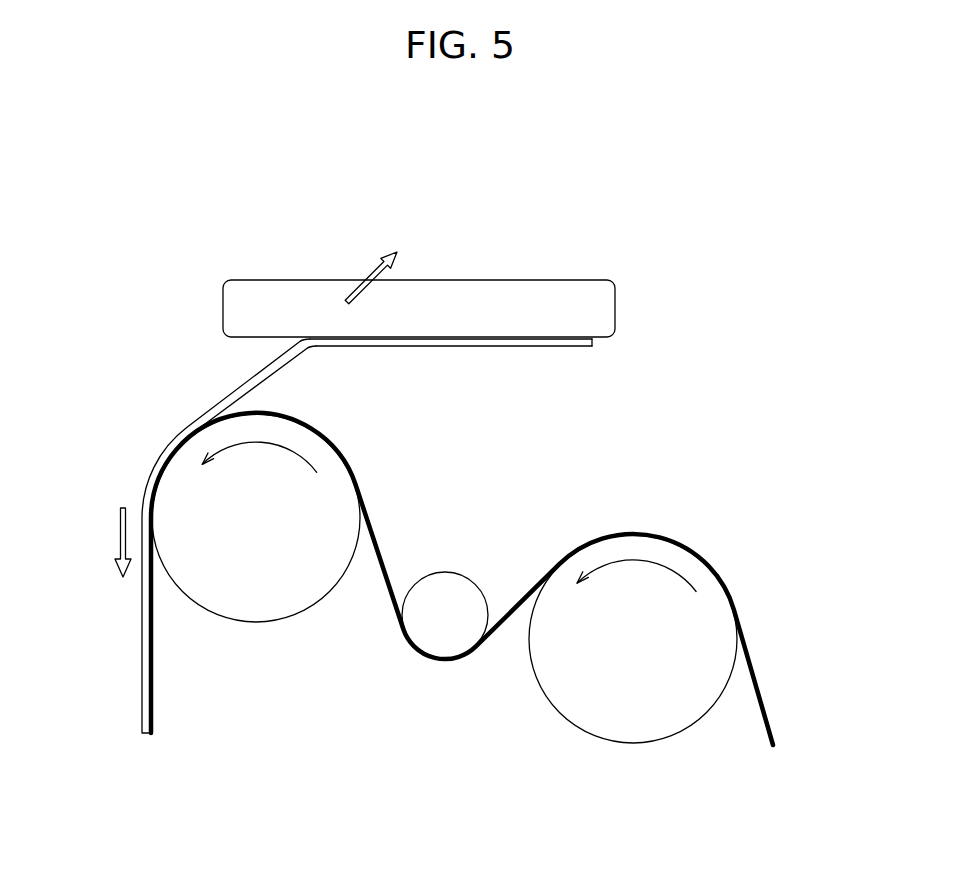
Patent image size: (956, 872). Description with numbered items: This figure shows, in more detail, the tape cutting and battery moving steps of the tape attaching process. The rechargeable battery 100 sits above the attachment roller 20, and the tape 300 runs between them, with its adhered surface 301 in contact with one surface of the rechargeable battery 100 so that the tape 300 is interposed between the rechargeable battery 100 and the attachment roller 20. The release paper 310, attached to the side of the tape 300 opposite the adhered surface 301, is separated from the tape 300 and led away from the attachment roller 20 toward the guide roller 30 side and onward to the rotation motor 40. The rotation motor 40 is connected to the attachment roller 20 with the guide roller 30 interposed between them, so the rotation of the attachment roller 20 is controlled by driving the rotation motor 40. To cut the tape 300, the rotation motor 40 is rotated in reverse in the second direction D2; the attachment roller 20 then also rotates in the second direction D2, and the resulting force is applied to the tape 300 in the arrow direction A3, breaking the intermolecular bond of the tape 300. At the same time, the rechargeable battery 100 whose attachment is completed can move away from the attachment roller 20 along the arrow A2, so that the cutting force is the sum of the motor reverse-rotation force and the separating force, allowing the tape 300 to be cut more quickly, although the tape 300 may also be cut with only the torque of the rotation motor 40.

The rechargeable battery 100 is at (607, 302).
The tape 300 is at (573, 346).
The adhered surface 301 is at (237, 388).
The release paper 310 is at (377, 541).
The attachment roller 20 is at (268, 590).
The guide roller 30 is at (455, 588).
The rotation motor 40 is at (638, 713).
The second direction D2 is at (303, 460).
The arrow A2 is at (391, 252).
The arrow direction A3 is at (119, 568).